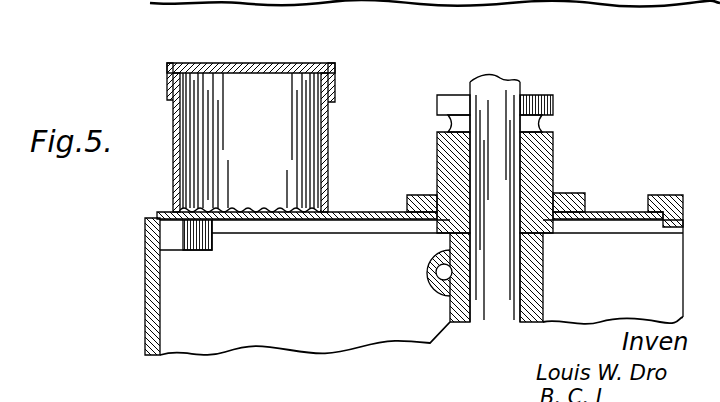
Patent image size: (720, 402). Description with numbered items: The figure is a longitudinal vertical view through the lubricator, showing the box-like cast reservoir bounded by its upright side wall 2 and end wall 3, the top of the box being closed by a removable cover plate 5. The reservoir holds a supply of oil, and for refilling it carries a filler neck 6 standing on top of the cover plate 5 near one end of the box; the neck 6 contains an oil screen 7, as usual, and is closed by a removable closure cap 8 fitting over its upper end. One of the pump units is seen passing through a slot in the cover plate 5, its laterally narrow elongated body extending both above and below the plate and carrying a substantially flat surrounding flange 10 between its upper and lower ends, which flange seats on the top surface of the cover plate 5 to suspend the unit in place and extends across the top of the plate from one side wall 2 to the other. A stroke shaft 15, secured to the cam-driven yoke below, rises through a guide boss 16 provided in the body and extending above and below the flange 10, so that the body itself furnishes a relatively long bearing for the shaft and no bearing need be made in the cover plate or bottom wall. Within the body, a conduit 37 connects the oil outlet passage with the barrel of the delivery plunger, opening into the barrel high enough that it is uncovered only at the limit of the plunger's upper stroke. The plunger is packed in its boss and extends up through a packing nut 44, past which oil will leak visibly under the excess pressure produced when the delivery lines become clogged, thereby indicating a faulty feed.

The side wall 2 is at (275, 345).
The end wall 3 is at (145, 312).
The cover plate 5 is at (157, 213).
The filler neck 6 is at (331, 154).
The oil screen 7 is at (243, 207).
The closure cap 8 is at (250, 63).
The flange 10 is at (430, 206).
The stroke shaft 15 is at (505, 150).
The guide boss 16 is at (555, 160).
The conduit 37 is at (436, 272).
The packing nut 44 is at (437, 101).